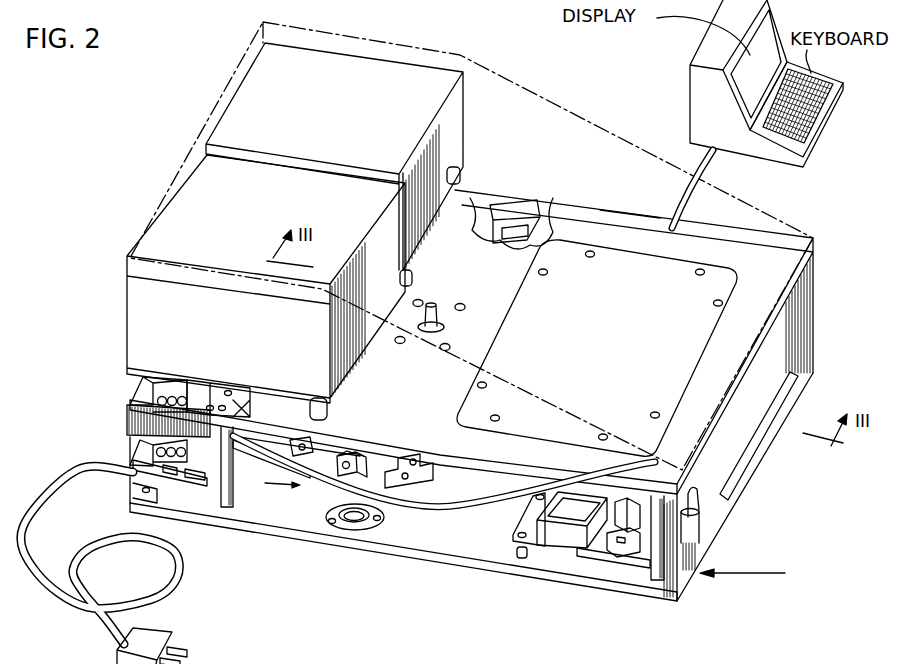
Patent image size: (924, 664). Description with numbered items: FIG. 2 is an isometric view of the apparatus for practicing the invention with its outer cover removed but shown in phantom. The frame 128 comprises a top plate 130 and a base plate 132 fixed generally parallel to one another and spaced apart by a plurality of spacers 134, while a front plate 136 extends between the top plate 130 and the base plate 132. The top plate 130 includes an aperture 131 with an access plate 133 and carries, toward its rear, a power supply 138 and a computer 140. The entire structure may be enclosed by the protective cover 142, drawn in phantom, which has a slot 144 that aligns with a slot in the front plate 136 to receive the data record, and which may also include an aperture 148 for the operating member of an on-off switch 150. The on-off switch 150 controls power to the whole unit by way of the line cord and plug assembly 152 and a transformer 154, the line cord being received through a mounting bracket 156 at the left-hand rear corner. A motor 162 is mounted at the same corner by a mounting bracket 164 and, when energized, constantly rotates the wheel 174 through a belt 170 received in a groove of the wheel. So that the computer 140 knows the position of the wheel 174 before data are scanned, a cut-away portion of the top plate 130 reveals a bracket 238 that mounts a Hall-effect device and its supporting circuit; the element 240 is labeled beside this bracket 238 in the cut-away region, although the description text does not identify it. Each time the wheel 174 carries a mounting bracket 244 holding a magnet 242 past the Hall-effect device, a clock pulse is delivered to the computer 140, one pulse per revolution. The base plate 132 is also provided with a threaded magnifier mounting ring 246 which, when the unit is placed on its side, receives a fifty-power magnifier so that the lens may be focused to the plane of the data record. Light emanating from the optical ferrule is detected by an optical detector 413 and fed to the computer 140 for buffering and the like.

The frame 128 is at (763, 573).
The top plate 130 is at (687, 248).
The aperture 131 is at (607, 248).
The base plate 132 is at (453, 547).
The access plate 133 is at (636, 266).
The spacers 134 is at (222, 508).
The front plate 136 is at (680, 563).
The power supply 138 is at (276, 223).
The computer 140 is at (328, 102).
The protective cover 142 is at (603, 130).
The slot 144 is at (747, 452).
The aperture 148 is at (684, 528).
The on-off switch 150 is at (700, 502).
The line cord and plug assembly 152 is at (172, 582).
The transformer 154 is at (560, 545).
The mounting bracket 156 is at (140, 452).
The motor 162 is at (125, 418).
The mounting bracket 164 is at (234, 402).
The belt 170 is at (247, 463).
The wheel 174 is at (457, 477).
The bracket 238 is at (525, 204).
The slot 240 is at (512, 232).
The magnet 242 is at (347, 452).
The mounting bracket 244 is at (405, 463).
The magnifier mounting ring 246 is at (340, 522).
The optical detector 413 is at (205, 663).